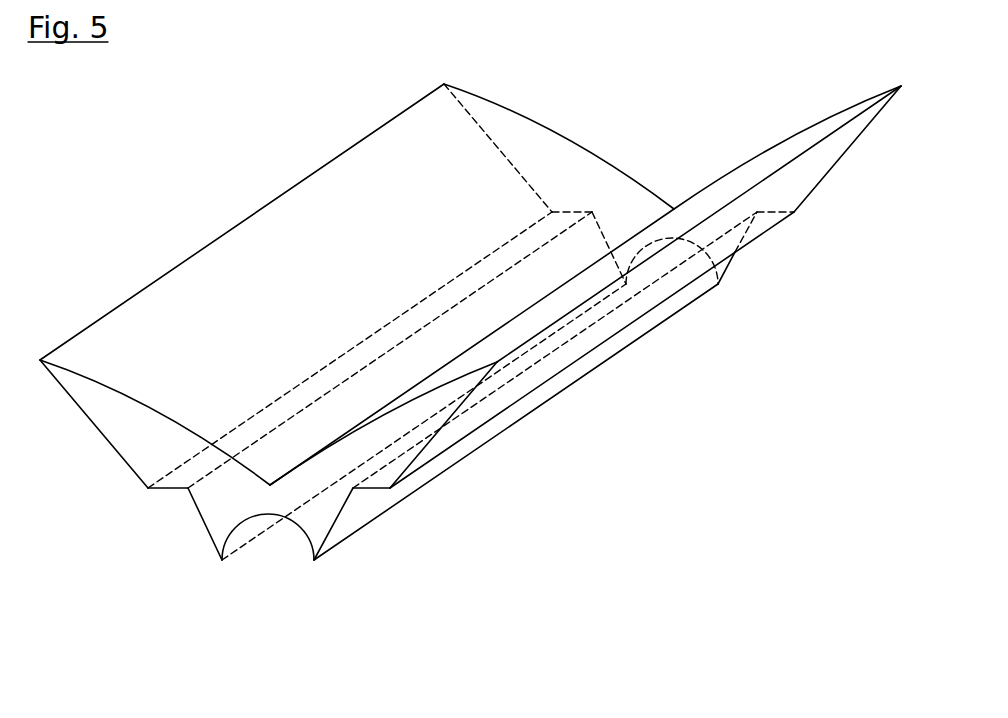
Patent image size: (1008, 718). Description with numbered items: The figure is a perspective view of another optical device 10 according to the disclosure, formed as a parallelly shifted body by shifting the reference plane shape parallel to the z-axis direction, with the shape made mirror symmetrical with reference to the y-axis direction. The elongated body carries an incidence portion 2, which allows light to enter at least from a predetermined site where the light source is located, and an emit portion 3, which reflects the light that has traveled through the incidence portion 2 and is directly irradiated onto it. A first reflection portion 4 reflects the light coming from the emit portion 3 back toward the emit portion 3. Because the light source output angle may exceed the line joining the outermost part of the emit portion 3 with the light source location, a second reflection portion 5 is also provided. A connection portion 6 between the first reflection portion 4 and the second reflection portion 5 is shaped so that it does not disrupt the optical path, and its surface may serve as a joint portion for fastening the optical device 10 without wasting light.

The optical device 10 is at (73, 85).
The incidence portion 2 is at (287, 514).
The emit portion 3 is at (210, 300).
The first reflection portion 4 is at (805, 180).
The second reflection portion 5 is at (527, 408).
The connection portion 6 is at (370, 492).